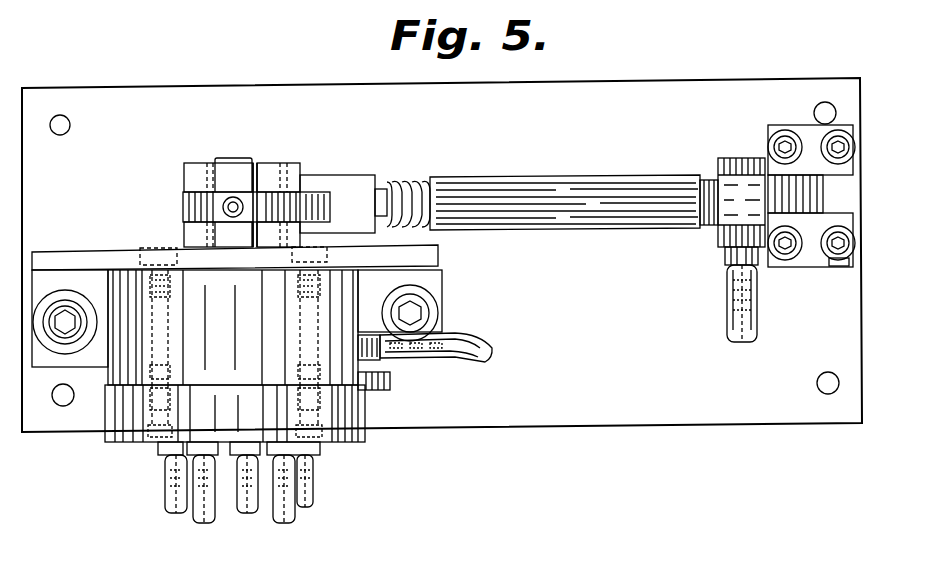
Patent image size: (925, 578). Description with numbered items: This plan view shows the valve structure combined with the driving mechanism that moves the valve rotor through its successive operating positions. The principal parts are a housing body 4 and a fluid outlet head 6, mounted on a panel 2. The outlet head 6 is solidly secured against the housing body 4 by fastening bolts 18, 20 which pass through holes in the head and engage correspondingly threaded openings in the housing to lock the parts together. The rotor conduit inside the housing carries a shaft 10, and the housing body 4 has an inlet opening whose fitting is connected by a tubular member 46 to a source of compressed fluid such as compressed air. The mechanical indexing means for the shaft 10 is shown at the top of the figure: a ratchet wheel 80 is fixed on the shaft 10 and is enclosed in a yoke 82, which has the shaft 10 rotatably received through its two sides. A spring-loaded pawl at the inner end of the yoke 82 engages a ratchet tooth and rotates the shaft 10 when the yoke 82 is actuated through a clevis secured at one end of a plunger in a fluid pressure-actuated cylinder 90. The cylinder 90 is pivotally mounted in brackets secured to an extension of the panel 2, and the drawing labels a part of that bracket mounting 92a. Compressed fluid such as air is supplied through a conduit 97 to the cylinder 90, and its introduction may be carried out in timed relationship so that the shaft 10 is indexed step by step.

The panel 2 is at (445, 253).
The housing body 4 is at (180, 250).
The fluid outlet head 6 is at (350, 444).
The shaft 10 is at (232, 158).
The bolt 18 is at (115, 445).
The bolt 20 is at (327, 447).
The tubular member 46 is at (485, 339).
The ratchet wheel 80 is at (183, 204).
The yoke 82 is at (200, 163).
The fluid pressure-actuated cylinder 90 is at (641, 177).
The clamp part 92a is at (829, 268).
The conduit 97 is at (732, 343).